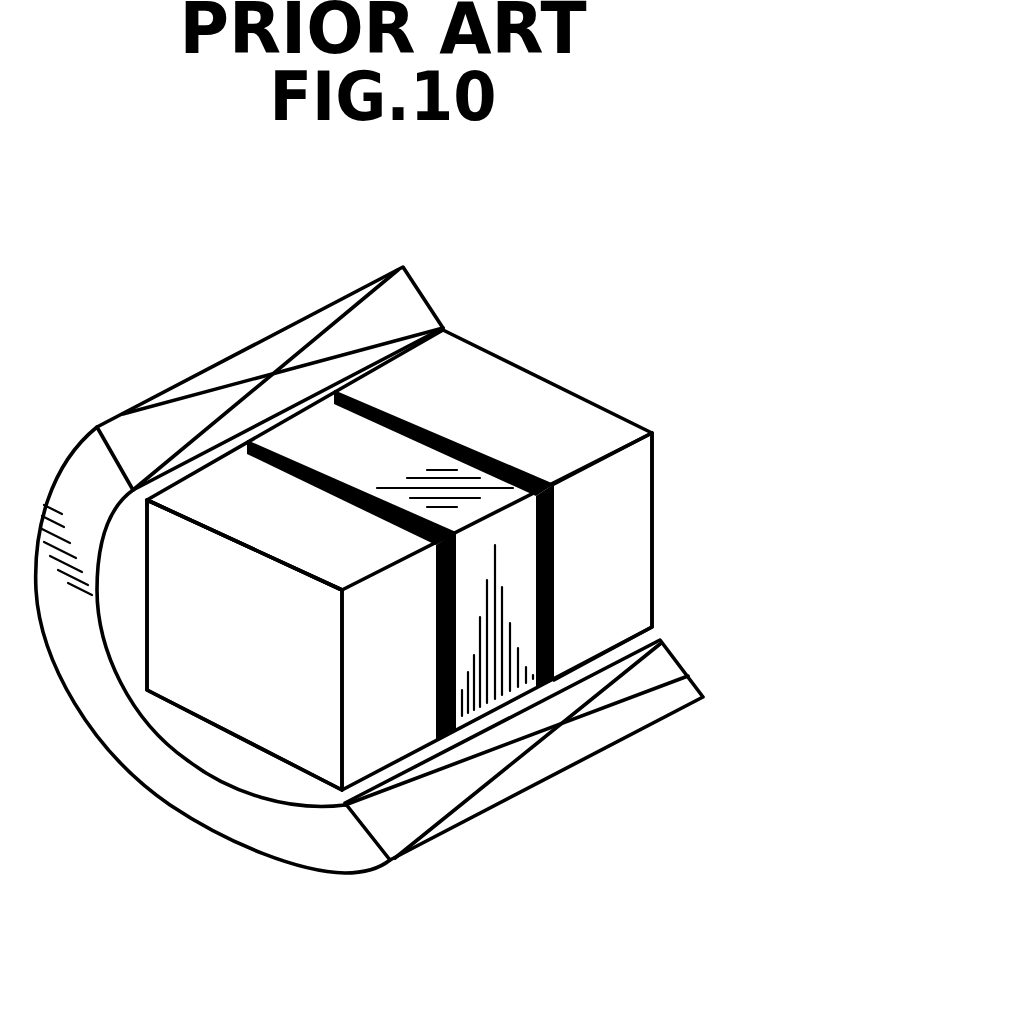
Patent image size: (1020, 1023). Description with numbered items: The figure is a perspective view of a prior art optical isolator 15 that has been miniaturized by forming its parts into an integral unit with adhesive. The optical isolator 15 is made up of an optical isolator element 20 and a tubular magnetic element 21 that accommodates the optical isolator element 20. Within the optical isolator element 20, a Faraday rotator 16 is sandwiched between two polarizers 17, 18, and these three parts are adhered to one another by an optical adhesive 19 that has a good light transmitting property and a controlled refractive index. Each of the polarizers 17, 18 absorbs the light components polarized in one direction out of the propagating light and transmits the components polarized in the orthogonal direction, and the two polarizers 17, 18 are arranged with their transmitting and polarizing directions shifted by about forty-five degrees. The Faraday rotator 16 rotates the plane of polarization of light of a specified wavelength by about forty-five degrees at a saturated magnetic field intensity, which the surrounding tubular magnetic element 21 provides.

The optical isolator 15 is at (672, 536).
The Faraday rotator 16 is at (403, 463).
The polarizer 17 is at (273, 510).
The polarizer 18 is at (523, 437).
The optical adhesive 19 is at (488, 708).
The optical isolator element 20 is at (510, 226).
The tubular magnetic element 21 is at (667, 677).